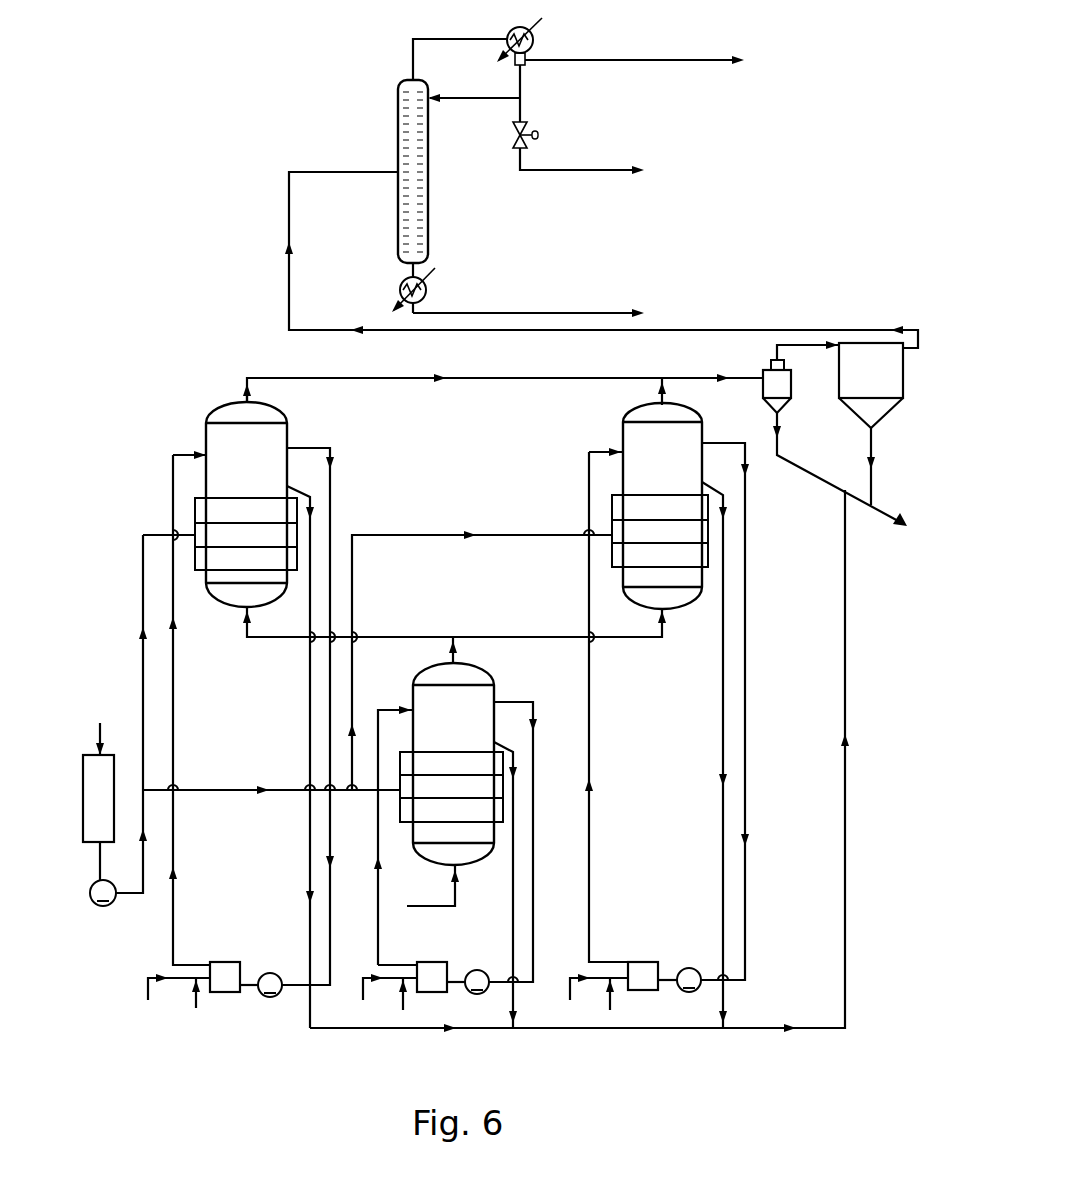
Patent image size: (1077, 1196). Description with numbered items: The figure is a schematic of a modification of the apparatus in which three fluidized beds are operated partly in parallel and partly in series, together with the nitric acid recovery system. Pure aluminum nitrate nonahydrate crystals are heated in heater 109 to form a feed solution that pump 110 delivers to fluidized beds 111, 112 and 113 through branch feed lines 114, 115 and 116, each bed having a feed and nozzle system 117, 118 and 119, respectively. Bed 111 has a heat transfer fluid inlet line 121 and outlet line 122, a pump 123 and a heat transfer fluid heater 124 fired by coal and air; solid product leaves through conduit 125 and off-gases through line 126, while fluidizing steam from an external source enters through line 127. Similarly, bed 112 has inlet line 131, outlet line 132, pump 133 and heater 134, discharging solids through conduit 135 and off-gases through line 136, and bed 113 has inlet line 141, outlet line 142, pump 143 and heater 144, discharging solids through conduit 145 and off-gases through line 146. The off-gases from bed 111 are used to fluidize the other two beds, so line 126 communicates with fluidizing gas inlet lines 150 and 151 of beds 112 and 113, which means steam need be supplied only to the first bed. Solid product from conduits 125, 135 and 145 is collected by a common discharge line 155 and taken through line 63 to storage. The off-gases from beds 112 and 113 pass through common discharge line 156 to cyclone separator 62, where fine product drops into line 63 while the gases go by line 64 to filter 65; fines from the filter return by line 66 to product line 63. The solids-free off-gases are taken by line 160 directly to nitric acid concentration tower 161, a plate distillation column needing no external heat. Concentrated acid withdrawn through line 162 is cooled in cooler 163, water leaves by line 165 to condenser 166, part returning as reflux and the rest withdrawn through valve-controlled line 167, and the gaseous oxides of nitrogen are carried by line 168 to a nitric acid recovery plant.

The cyclone separator 62 is at (765, 387).
The line 63 is at (797, 462).
The line 64 is at (788, 350).
The filter 65 is at (882, 379).
The line 66 is at (875, 447).
The heater 109 is at (110, 820).
The pump 110 is at (100, 912).
The fluidized bed 111 is at (470, 720).
The fluidized bed 112 is at (264, 466).
The fluidized bed 113 is at (678, 466).
The branch feed line 114 is at (200, 790).
The branch feed line 115 is at (140, 598).
The branch feed line 116 is at (432, 538).
The feed and nozzle system 117 is at (449, 788).
The feed and nozzle system 118 is at (240, 537).
The feed and nozzle system 119 is at (654, 535).
The heat transfer fluid inlet line 121 is at (388, 705).
The heat transfer fluid outlet line 122 is at (536, 750).
The pump 123 is at (477, 970).
The heat transfer fluid heater 124 is at (427, 966).
The conduit 125 is at (515, 840).
The line 126 is at (460, 660).
The line 127 is at (458, 896).
The heat transfer fluid inlet line 131 is at (178, 672).
The heat transfer fluid outlet line 132 is at (335, 490).
The pump 133 is at (266, 972).
The heat transfer fluid heater 134 is at (220, 966).
The conduit 135 is at (312, 533).
The line 136 is at (252, 398).
The heat transfer fluid inlet line 141 is at (592, 880).
The heat transfer fluid outlet line 142 is at (748, 918).
The pump 143 is at (692, 970).
The heat transfer fluid heater 144 is at (638, 966).
The conduit 145 is at (726, 880).
The line 146 is at (655, 398).
The fluidizing gas inlet line 150 is at (440, 634).
The fluidizing gas inlet line 151 is at (490, 636).
The common discharge line 155 is at (500, 1030).
The common discharge line 156 is at (505, 382).
The line 160 is at (700, 330).
The nitric acid concentration tower 161 is at (426, 197).
The line 162 is at (490, 312).
The cooler 163 is at (427, 295).
The line 165 is at (413, 72).
The condenser 166 is at (535, 39).
The valve-controlled line 167 is at (525, 162).
The line 168 is at (675, 62).